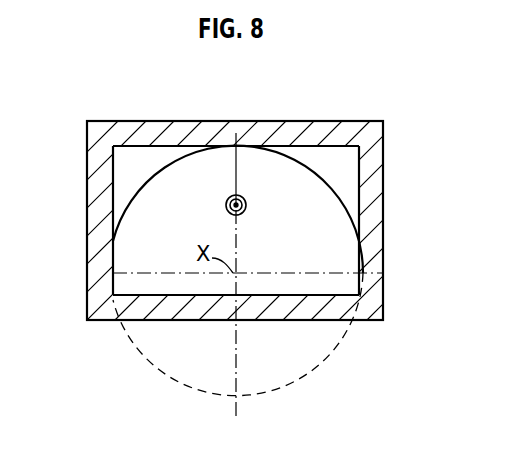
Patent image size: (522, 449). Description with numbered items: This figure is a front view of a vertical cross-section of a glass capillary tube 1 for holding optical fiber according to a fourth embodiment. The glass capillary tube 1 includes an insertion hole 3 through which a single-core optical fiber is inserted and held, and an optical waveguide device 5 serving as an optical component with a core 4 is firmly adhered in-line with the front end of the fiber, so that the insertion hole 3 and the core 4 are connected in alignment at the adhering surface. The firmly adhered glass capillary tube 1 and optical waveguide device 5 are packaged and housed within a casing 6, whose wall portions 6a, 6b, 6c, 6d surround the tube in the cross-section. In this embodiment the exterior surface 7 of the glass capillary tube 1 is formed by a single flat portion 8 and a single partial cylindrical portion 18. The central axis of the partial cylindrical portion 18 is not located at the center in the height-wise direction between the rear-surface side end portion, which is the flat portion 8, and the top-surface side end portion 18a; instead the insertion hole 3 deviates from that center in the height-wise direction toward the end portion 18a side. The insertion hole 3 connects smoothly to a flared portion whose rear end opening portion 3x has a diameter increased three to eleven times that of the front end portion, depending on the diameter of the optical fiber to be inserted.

The glass capillary tube 1 is at (333, 237).
The insertion hole 3 is at (225, 205).
The rear end opening portion 3x is at (246, 209).
The core 4 is at (246, 199).
The optical waveguide device 5 is at (340, 170).
The casing 6 is at (347, 120).
The bottom wall 6a is at (285, 308).
The top wall 6b is at (188, 133).
The left side wall 6c is at (96, 197).
The right side wall 6d is at (375, 255).
The exterior surface 7 is at (150, 174).
The first flat portion 8 is at (179, 304).
The partial cylindrical portion 18 is at (343, 205).
The end portion 18a is at (256, 133).